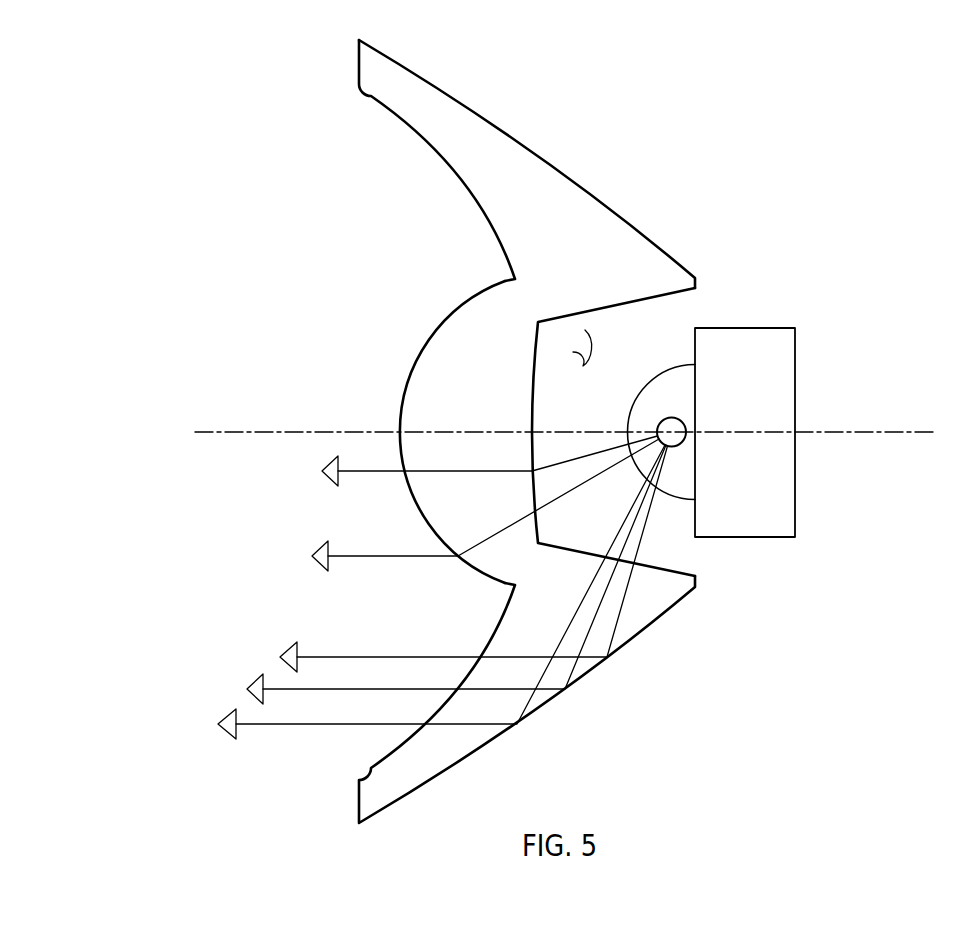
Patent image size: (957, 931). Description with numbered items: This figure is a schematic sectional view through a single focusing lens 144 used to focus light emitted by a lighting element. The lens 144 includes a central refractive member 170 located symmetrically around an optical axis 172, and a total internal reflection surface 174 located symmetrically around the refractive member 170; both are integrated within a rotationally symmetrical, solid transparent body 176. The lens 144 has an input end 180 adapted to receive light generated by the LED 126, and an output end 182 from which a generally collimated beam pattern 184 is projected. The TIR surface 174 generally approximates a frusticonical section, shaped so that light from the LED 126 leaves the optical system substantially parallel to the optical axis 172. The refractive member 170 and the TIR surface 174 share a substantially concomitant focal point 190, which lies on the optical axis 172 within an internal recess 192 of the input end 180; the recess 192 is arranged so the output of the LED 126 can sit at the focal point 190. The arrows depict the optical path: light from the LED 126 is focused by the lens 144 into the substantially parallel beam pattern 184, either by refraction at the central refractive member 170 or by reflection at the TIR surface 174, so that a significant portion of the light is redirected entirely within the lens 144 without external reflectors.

The focusing lens 144 is at (616, 426).
The solid transparent body 176 is at (435, 112).
The input end 180 is at (723, 293).
The total internal reflection surface 174 is at (636, 636).
The central refractive member 170 is at (417, 357).
The internal recess 192 is at (573, 352).
The LED 126 is at (780, 388).
The focal point 190 is at (687, 440).
The optical axis 172 is at (911, 430).
The collimated beam pattern 184 is at (230, 525).
The output end 182 is at (303, 768).